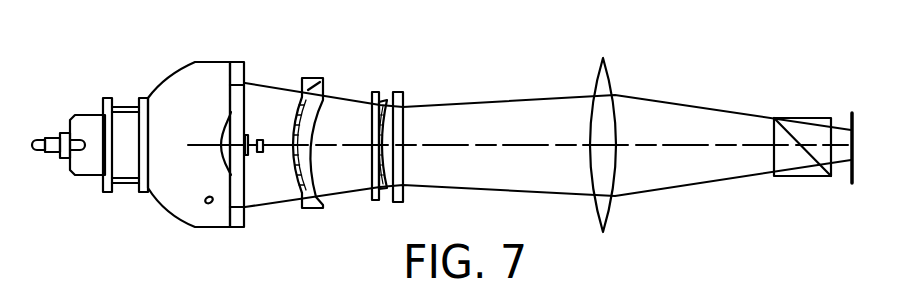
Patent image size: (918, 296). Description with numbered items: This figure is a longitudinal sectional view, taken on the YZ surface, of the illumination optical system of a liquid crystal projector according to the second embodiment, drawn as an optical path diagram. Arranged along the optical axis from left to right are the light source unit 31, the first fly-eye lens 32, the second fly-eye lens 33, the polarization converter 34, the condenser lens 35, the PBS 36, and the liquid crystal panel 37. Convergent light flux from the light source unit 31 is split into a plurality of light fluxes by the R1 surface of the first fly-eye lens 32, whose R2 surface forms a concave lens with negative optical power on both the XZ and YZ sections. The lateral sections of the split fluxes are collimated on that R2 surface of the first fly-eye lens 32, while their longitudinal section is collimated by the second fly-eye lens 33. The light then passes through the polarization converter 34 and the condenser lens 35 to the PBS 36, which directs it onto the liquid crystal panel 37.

The light source unit 31 is at (213, 73).
The first fly-eye lens 32 is at (323, 80).
The second fly-eye lens 33 is at (382, 93).
The polarization converter 34 is at (405, 100).
The condenser lens 35 is at (602, 82).
The PBS 36 is at (798, 120).
The liquid crystal panel 37 is at (854, 128).